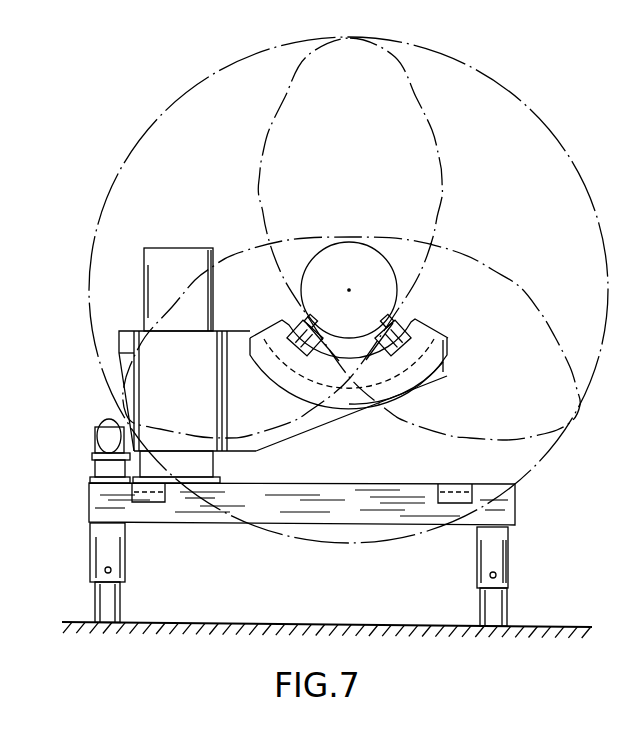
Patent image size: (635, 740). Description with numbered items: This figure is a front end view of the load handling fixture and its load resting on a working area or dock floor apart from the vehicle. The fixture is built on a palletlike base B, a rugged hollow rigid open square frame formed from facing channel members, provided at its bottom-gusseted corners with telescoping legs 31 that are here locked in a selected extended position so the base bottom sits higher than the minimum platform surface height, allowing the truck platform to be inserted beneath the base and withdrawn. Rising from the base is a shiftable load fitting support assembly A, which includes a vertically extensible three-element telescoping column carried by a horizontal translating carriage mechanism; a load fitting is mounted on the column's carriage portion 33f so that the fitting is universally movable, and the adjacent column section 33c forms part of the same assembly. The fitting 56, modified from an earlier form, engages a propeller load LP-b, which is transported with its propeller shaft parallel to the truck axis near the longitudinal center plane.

The telescoping legs 31 is at (99, 556).
The housing of mirror assembly 33c is at (166, 401).
The carriage portion 33f is at (211, 334).
The fitting 56 is at (311, 440).
The load fitting support assembly A is at (111, 367).
The base B is at (90, 506).
The propeller load LP-b is at (497, 273).